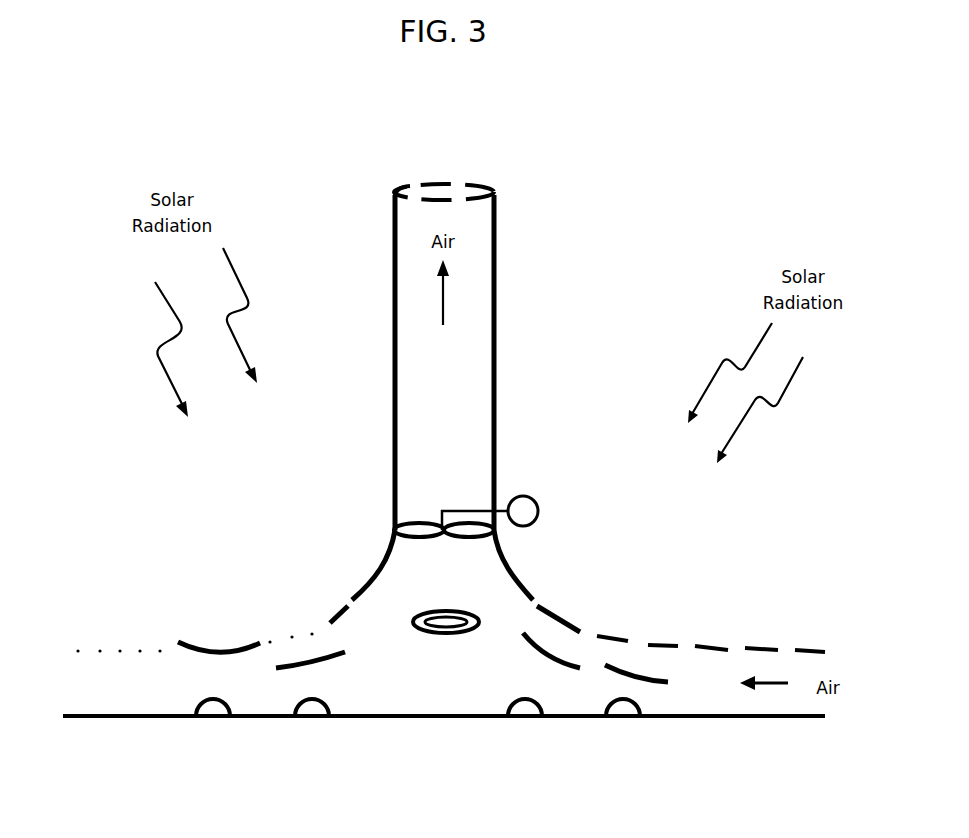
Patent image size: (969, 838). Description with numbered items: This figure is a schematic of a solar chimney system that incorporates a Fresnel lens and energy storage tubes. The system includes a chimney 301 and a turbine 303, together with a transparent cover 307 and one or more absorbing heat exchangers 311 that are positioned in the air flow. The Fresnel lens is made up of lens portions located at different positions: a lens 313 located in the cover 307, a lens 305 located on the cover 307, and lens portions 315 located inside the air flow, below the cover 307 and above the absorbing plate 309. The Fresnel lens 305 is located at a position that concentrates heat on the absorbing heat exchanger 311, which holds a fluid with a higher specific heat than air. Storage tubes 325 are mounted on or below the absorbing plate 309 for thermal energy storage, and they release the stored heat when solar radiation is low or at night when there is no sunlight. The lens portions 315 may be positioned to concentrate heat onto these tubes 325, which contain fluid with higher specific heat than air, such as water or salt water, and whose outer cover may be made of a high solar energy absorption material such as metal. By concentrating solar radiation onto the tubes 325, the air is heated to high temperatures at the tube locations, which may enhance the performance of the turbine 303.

The chimney 301 is at (497, 340).
The turbine 303 is at (417, 522).
The lens 305 is at (375, 560).
The transparent cover 307 is at (125, 648).
The absorbing plate 309 is at (426, 718).
The absorbing heat exchanger 311 is at (440, 638).
The lens 313 is at (220, 650).
The lens portions 315 is at (325, 648).
The storage tubes 325 is at (210, 720).